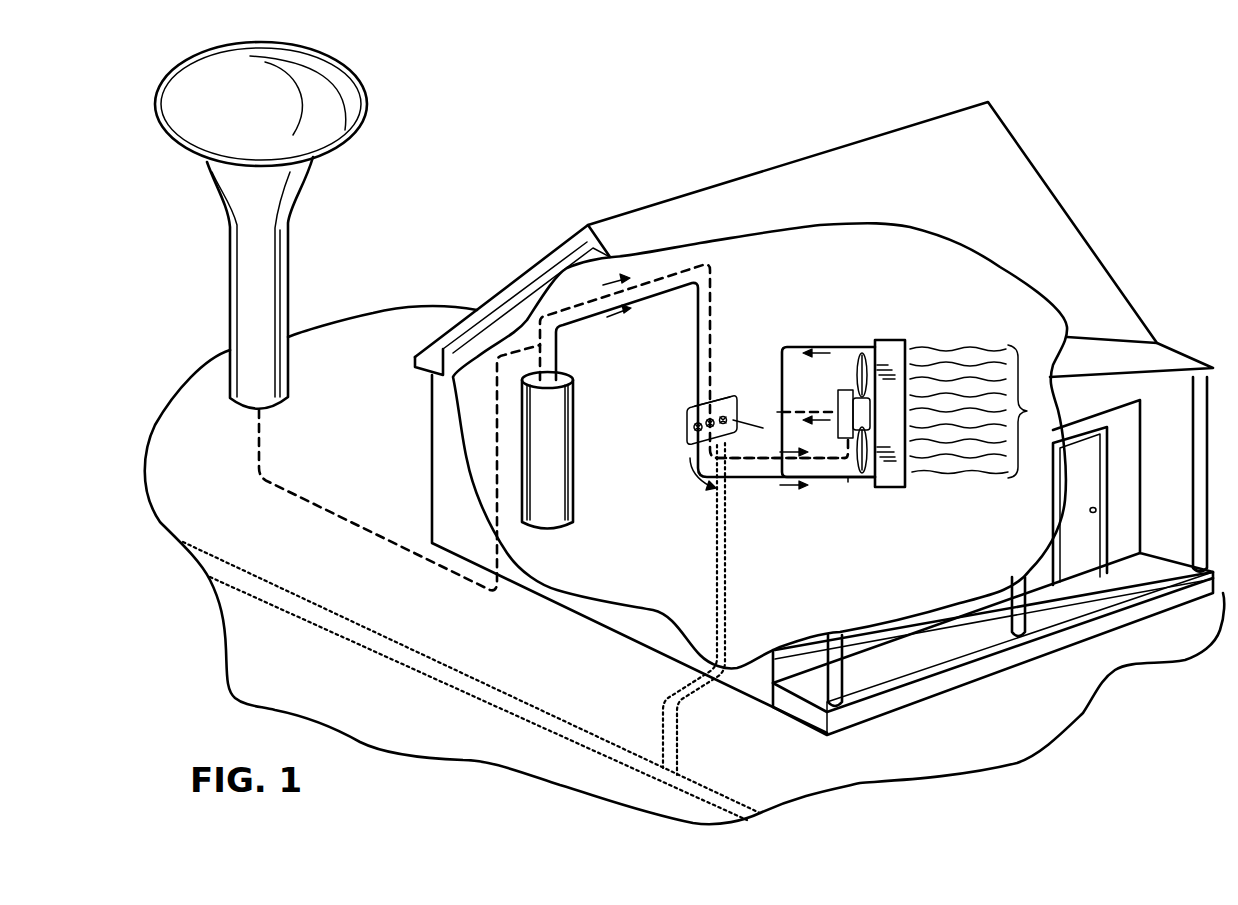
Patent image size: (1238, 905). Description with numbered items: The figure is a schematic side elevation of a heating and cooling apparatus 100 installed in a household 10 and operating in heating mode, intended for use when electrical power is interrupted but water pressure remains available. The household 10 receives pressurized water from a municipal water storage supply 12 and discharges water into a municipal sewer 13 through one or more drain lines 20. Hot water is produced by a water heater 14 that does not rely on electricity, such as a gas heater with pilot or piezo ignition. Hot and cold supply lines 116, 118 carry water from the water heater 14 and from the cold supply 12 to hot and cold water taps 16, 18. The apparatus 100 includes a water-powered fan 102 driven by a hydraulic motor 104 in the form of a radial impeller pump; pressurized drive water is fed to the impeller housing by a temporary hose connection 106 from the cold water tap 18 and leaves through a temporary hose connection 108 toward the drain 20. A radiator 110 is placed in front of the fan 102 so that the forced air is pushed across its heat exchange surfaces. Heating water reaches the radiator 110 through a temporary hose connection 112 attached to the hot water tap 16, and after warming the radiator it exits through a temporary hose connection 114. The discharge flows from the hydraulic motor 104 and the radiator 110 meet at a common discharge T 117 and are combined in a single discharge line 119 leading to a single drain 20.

The household 10 is at (1073, 250).
The municipal water storage supply 12 is at (325, 100).
The municipal sewer 13 is at (427, 680).
The water heater 14 is at (558, 422).
The hot water tap 16 is at (690, 418).
The cold water tap 18 is at (714, 405).
The drain line 20 is at (727, 563).
The heating and cooling apparatus 100 is at (883, 325).
The water-powered fan 102 is at (862, 353).
The hydraulic motor 104 is at (843, 390).
The temporary hose connection 106 is at (812, 460).
The temporary hose connection 108 is at (812, 412).
The radiator 110 is at (893, 347).
The temporary hose connection 112 is at (848, 480).
The temporary hose connection 114 is at (813, 347).
The hot supply line 116 is at (673, 287).
The common discharge T 117 is at (763, 428).
The cold supply line 118 is at (710, 300).
The single discharge line 119 is at (763, 430).